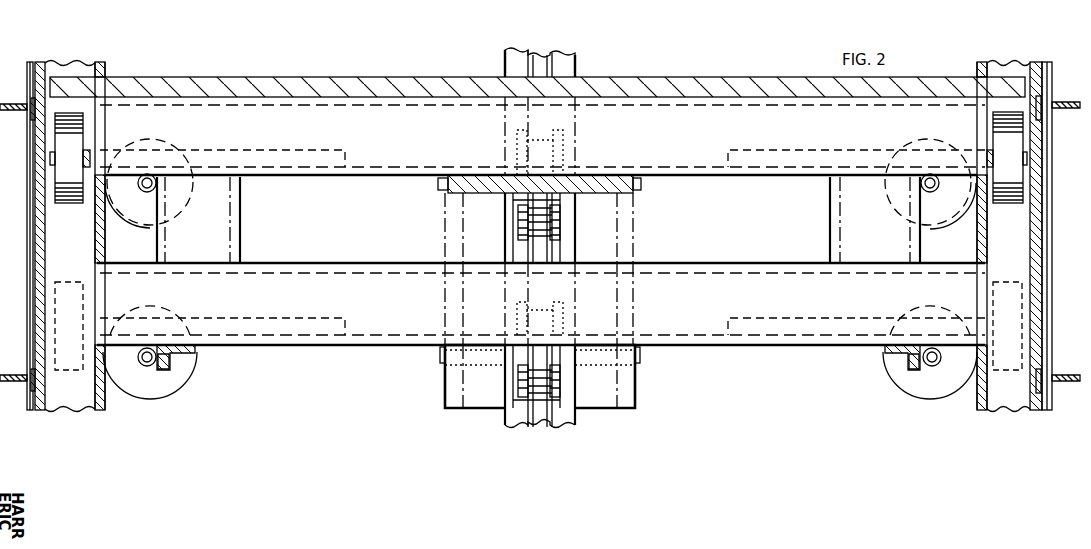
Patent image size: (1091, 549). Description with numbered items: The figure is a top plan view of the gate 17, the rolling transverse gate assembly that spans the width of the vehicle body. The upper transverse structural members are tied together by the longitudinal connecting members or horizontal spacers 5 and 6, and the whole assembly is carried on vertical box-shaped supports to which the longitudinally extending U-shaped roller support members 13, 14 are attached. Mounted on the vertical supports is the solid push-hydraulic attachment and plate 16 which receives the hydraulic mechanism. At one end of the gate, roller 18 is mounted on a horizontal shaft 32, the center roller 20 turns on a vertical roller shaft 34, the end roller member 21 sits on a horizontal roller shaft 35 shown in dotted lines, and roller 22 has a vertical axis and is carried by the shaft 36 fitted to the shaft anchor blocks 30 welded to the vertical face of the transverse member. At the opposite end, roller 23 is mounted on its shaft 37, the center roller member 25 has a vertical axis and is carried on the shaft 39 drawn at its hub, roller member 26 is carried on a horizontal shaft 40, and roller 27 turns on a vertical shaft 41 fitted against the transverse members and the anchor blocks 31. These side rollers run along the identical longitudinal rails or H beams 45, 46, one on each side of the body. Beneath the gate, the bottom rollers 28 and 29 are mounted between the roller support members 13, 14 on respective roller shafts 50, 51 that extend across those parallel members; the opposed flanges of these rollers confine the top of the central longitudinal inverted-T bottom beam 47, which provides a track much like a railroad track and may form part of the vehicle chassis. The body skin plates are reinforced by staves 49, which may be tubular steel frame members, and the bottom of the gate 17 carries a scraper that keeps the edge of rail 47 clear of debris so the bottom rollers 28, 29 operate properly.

The horizontal spacer 5 is at (206, 247).
The horizontal spacer 6 is at (875, 220).
The roller support member 13 is at (445, 393).
The roller support member 14 is at (641, 393).
The push-hydraulic attachment and plate 16 is at (490, 193).
The gate 17 is at (110, 77).
The roller 18 is at (75, 160).
The center roller 20 is at (147, 214).
The end roller member 21 is at (75, 330).
The roller 22 is at (148, 384).
The roller 23 is at (1013, 160).
The center roller member 25 is at (944, 214).
The roller member 26 is at (1015, 330).
The roller 27 is at (946, 385).
The bottom roller 28 is at (545, 205).
The bottom roller 29 is at (545, 372).
The shaft anchor block 30 is at (167, 352).
The shaft anchor block 31 is at (888, 350).
The horizontal shaft 32 is at (315, 158).
The vertical roller shaft 34 is at (152, 184).
The horizontal roller shaft 35 is at (290, 330).
The shaft 36 is at (172, 362).
The shaft 37 is at (783, 157).
The roller axle 39 is at (925, 184).
The horizontal shaft 40 is at (795, 328).
The vertical shaft 41 is at (912, 362).
The longitudinal rail 45 is at (72, 247).
The longitudinal rail 46 is at (1012, 247).
The bottom beam 47 is at (562, 67).
The stave 49 is at (1066, 108).
The roller shaft 50 is at (641, 180).
The roller shaft 51 is at (641, 356).